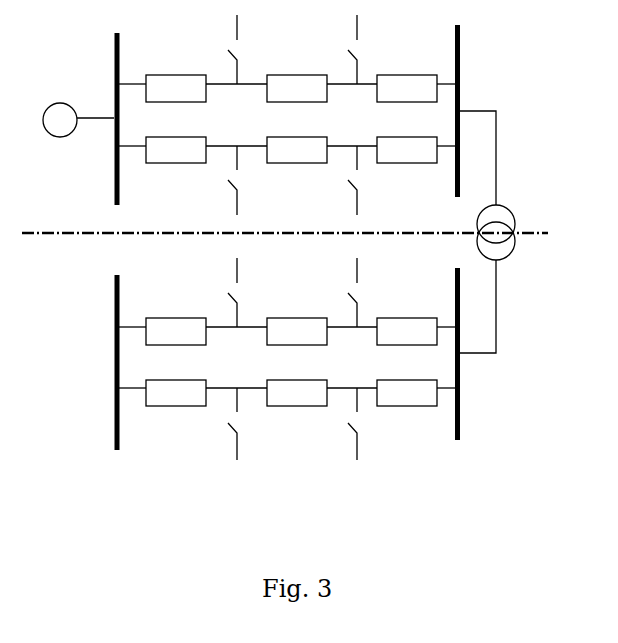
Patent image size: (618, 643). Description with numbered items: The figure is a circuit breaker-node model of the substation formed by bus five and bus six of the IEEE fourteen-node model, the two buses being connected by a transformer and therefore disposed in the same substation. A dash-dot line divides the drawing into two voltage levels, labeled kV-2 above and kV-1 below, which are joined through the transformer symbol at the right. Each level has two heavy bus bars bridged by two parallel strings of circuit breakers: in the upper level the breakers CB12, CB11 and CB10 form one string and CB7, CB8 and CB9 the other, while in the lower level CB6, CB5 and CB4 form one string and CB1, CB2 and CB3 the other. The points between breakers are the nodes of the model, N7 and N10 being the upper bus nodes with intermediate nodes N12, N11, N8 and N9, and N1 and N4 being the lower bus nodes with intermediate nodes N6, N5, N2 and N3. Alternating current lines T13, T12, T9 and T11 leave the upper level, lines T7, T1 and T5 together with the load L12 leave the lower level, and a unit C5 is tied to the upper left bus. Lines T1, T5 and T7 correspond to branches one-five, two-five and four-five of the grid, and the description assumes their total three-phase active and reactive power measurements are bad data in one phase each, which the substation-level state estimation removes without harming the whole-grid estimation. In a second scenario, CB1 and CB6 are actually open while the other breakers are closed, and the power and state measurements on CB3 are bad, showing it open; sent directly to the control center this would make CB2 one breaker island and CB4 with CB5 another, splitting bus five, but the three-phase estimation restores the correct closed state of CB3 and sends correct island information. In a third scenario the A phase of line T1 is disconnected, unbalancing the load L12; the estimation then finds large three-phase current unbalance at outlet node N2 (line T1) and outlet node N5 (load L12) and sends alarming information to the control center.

The generator / current source C5 is at (78, 120).
The circuit breaker CB1 is at (176, 393).
The circuit breaker CB2 is at (297, 393).
The circuit breaker CB3 is at (407, 393).
The circuit breaker CB4 is at (407, 331).
The circuit breaker CB5 is at (297, 331).
The circuit breaker CB6 is at (176, 331).
The circuit breaker 7 CB7 is at (176, 150).
The circuit breaker 8 CB8 is at (297, 150).
The circuit breaker 9 CB9 is at (407, 150).
The circuit breaker 10 CB10 is at (407, 88).
The circuit breaker 11 CB11 is at (297, 88).
The circuit breaker 12 CB12 is at (176, 88).
The node 1 (left bus, kV-1) N1 is at (125, 362).
The outlet node N2 is at (236, 377).
The node 3 N3 is at (352, 377).
The node 4 (right bus, kV-1) N4 is at (447, 354).
The outlet node N5 is at (352, 341).
The node 6 N6 is at (236, 341).
The node 7 (left bus, kV-2) N7 is at (125, 119).
The node 8 N8 is at (236, 135).
The node 9 N9 is at (352, 135).
The node 10 (right bus, kV-2) N10 is at (446, 111).
The node 11 N11 is at (352, 99).
The node 12 N12 is at (236, 98).
The alternating current line T1 is at (222, 427).
The alternating current line T5 is at (347, 424).
The alternating current line T7 is at (222, 292).
The transmission line / feeder T9 is at (222, 180).
The transmission line / feeder T11 is at (337, 180).
The transmission line / feeder T12 is at (337, 49).
The transmission line / feeder T13 is at (212, 49).
The load L12 is at (337, 292).
The voltage level 1 bus connection kV-1 is at (503, 306).
The voltage level 2 bus connection kV-2 is at (503, 158).